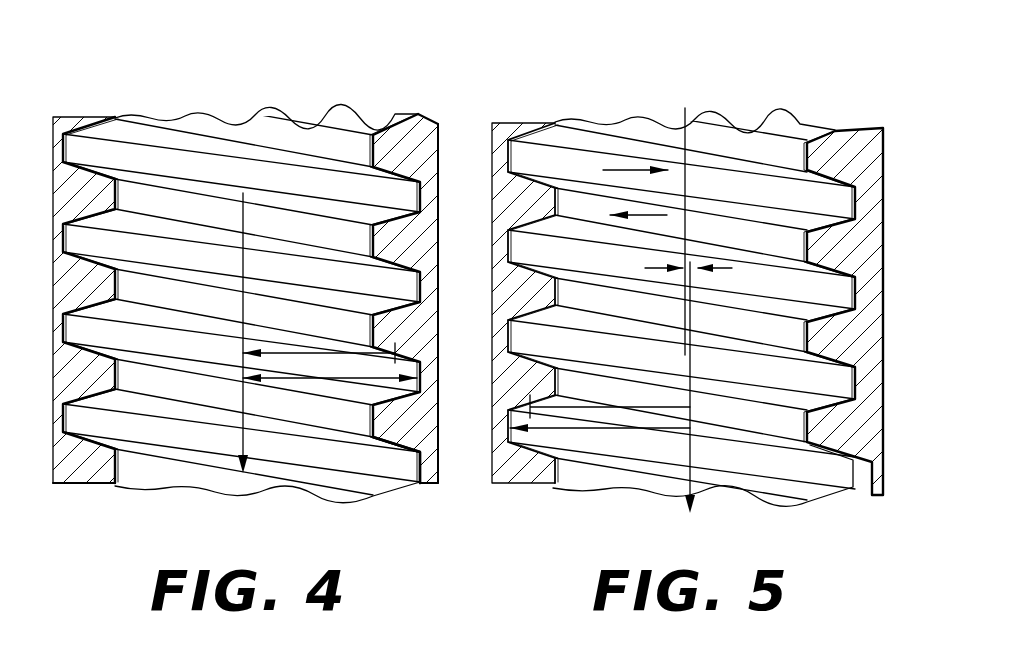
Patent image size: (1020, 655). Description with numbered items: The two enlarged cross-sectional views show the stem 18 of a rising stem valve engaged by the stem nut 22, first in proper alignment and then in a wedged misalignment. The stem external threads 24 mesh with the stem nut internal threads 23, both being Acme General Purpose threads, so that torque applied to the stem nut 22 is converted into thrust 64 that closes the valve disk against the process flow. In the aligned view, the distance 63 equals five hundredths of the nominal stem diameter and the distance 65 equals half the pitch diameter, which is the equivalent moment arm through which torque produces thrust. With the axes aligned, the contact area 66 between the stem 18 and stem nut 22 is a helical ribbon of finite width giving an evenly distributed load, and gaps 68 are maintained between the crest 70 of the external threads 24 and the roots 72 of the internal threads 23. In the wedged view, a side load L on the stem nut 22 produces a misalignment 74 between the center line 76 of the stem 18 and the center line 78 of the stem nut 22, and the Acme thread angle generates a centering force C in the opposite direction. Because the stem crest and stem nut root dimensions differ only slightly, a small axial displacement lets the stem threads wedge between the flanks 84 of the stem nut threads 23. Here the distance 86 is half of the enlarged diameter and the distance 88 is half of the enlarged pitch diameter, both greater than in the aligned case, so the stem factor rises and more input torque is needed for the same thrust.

In FIG. 4, the stem 18 is at (302, 126).
In FIG. 5, the stem 18 is at (628, 120).
In FIG. 4, the stem nut 22 is at (420, 114).
In FIG. 5, the stem nut 22 is at (863, 128).
In FIG. 4, the stem nut internal threads 23 is at (408, 147).
In FIG. 4, the stem external threads 24 is at (153, 431).
In FIG. 4, the distance 63 is at (343, 379).
In FIG. 4, the thrust 64 is at (243, 316).
In FIG. 4, the distance 65 is at (278, 353).
In FIG. 4, the contact area 66 is at (450, 425).
In FIG. 4, the gaps 68 is at (66, 408).
In FIG. 4, the crest 70 is at (417, 468).
In FIG. 4, the roots 72 is at (441, 478).
In FIG. 5, the misalignment 74 is at (692, 262).
In FIG. 5, the center line of the stem 76 is at (687, 109).
In FIG. 5, the center line of the stem nut 78 is at (692, 448).
In FIG. 5, the flanks 84 is at (520, 406).
In FIG. 5, the distance 86 is at (575, 430).
In FIG. 5, the distance 88 is at (641, 408).
In FIG. 5, the centering force C is at (634, 168).
In FIG. 5, the side load L is at (636, 218).